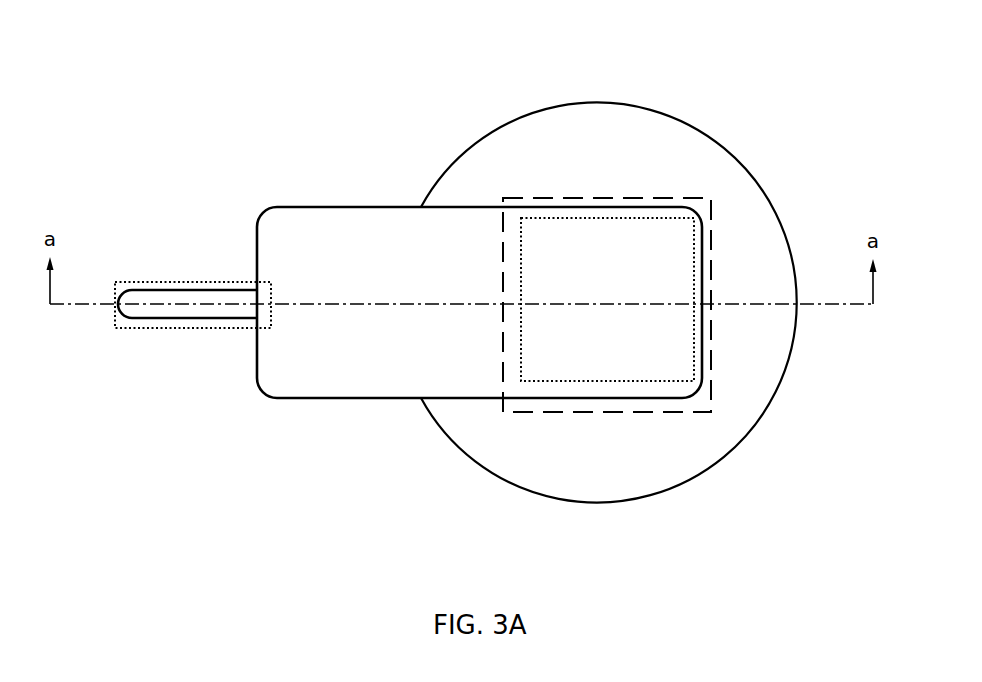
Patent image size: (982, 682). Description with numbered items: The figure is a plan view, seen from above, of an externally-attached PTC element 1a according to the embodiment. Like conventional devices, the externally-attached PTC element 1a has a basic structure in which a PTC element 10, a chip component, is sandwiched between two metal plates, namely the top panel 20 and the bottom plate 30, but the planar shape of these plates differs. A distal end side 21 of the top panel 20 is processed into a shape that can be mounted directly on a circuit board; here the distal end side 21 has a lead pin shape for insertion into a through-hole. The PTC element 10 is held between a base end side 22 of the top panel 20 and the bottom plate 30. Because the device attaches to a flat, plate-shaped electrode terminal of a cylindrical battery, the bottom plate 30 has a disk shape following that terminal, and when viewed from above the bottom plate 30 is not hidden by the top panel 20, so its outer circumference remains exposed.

The externally-attached PTC element 1a is at (394, 118).
The PTC element 10 is at (595, 210).
The top panel 20 is at (377, 388).
The distal end side 21 is at (155, 329).
The base end side 22 is at (695, 413).
The bottom plate 30 is at (705, 155).